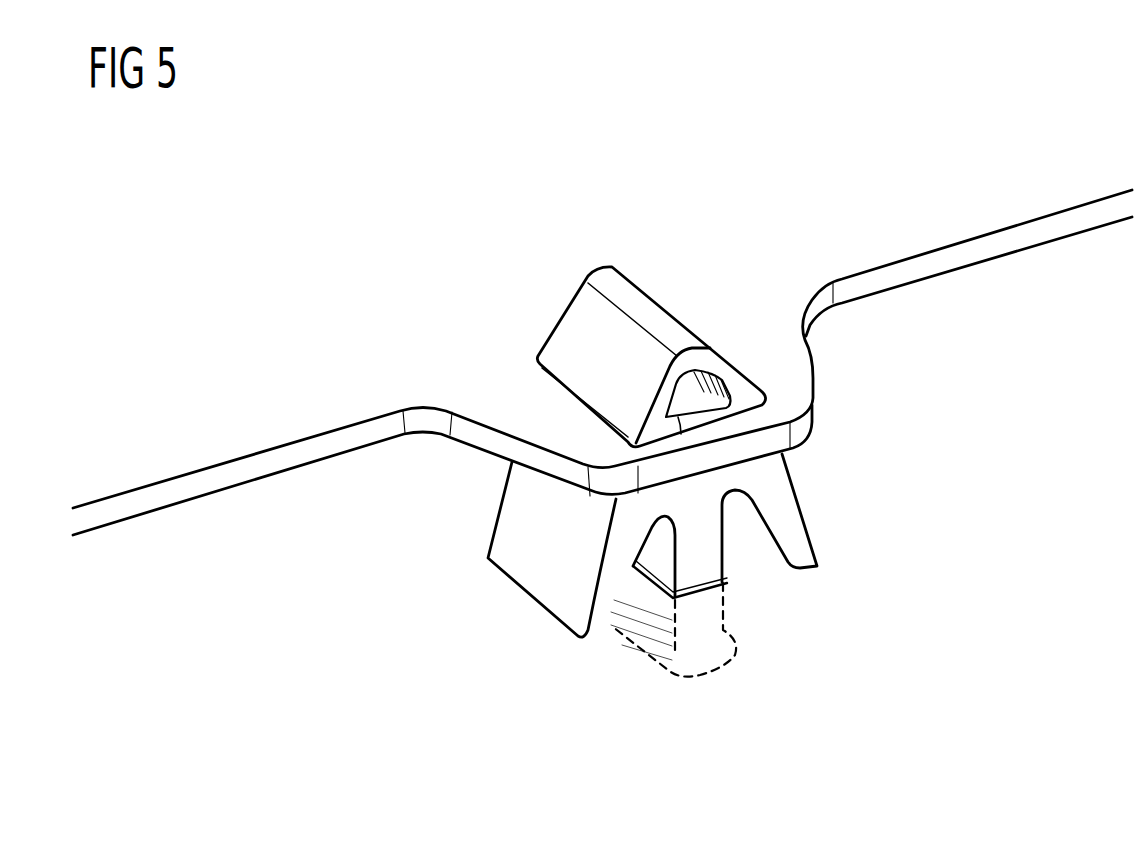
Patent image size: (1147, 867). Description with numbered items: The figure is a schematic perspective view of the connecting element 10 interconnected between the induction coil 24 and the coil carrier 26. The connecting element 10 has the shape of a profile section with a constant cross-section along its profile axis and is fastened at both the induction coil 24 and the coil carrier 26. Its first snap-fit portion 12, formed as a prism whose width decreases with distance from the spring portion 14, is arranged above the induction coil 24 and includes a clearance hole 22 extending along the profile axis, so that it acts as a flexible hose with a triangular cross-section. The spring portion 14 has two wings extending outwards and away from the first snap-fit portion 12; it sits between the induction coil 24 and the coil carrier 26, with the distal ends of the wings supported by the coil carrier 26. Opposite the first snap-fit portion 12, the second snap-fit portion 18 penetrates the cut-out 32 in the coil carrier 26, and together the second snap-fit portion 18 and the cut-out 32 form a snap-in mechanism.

The connecting element 10 is at (660, 247).
The first snap-fit portion 12 is at (581, 331).
The spring portion 14 is at (800, 545).
The second snap-fit portion 18 is at (700, 655).
The clearance hole 22 is at (703, 380).
The induction coil 24 is at (172, 493).
The coil carrier 26 is at (504, 678).
The cut-out 32 is at (724, 583).